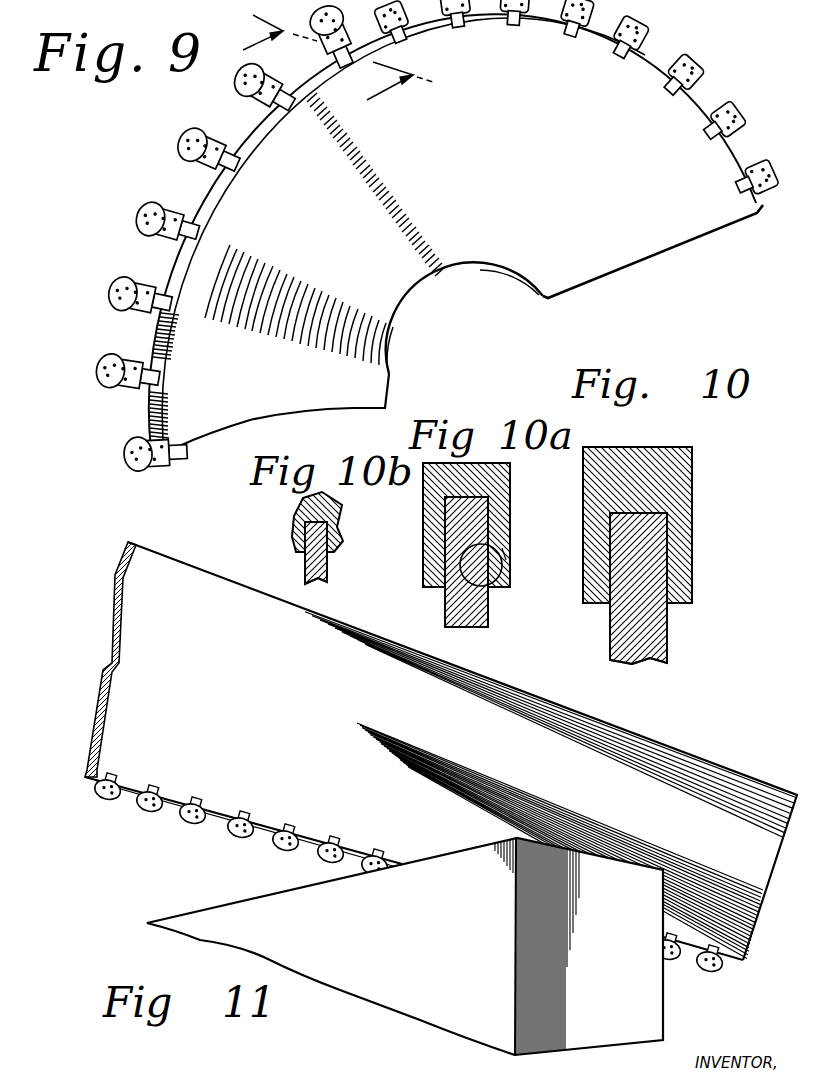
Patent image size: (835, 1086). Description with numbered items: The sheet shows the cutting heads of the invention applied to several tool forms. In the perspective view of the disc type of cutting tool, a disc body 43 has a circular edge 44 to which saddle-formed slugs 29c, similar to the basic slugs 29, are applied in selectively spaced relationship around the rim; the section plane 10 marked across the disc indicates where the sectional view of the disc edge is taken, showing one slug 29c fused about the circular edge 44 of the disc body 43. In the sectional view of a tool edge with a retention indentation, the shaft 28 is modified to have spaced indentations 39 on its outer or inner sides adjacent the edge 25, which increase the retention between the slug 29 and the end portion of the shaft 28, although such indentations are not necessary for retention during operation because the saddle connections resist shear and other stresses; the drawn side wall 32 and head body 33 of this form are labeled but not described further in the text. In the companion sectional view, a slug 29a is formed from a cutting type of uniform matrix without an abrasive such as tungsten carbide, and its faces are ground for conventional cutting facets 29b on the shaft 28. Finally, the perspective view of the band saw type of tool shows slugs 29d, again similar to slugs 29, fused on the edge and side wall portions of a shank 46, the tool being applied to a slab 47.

In FIG. 9, the plane 10— 10 is at (326, 69).
In FIG. 9, the disc body 43 is at (516, 241).
In FIG. 10, the disc body 43 is at (678, 643).
In FIG. 11, the disc body 43 is at (220, 812).
In FIG. 10A, the slug 29 is at (483, 463).
In FIG. 10A, the shaft 28 is at (490, 624).
In FIG. 10B, the shaft 28 is at (303, 563).
In FIG. 10A, the edge 25 is at (476, 494).
In FIG. 10A, the side wall 32 is at (508, 541).
In FIG. 10A, the head body 33 is at (430, 530).
In FIG. 10A, the indentations 39 is at (492, 590).
In FIG. 10B, the slug 29a is at (299, 499).
In FIG. 10B, the cutting facets 29b is at (332, 498).
In FIG. 10, the slugs 29c is at (647, 447).
In FIG. 10, the circular edge 44 is at (660, 513).
In FIG. 11, the shank 46 is at (120, 670).
In FIG. 11, the slugs 29d is at (153, 808).
In FIG. 11, the slab 47 is at (402, 992).